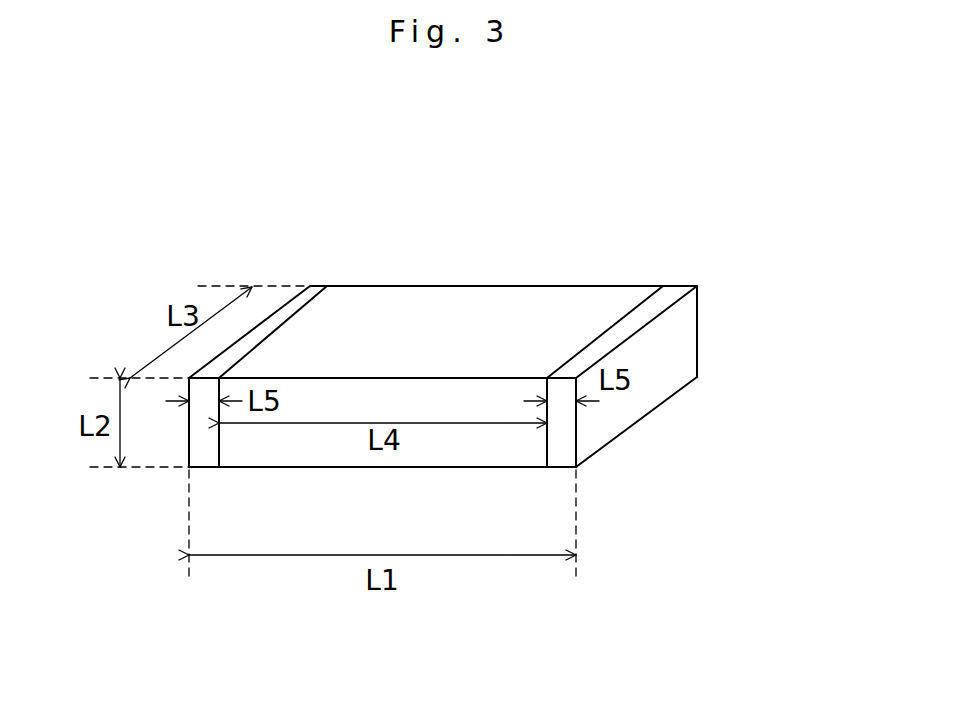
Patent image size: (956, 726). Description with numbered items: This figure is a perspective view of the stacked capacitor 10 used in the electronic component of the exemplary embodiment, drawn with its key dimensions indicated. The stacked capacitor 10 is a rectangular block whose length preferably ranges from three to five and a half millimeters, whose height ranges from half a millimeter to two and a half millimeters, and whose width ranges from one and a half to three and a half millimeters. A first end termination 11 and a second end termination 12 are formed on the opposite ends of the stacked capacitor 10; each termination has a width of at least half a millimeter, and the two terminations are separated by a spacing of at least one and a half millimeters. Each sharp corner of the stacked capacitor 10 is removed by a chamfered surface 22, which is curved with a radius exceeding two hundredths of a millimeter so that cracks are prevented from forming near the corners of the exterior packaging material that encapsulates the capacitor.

The stacked capacitor 10 is at (470, 290).
The first end termination 11 is at (325, 287).
The second end termination 12 is at (670, 283).
The chamfered surface 22 is at (175, 361).